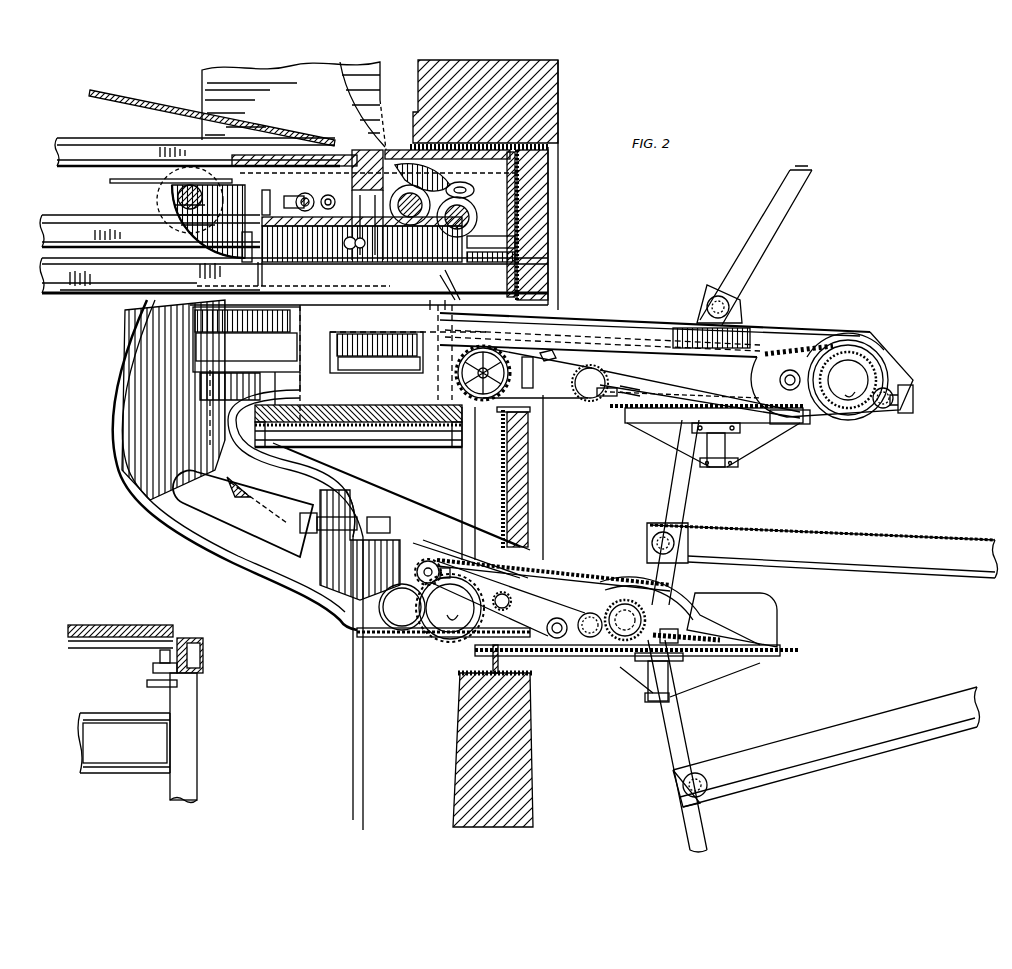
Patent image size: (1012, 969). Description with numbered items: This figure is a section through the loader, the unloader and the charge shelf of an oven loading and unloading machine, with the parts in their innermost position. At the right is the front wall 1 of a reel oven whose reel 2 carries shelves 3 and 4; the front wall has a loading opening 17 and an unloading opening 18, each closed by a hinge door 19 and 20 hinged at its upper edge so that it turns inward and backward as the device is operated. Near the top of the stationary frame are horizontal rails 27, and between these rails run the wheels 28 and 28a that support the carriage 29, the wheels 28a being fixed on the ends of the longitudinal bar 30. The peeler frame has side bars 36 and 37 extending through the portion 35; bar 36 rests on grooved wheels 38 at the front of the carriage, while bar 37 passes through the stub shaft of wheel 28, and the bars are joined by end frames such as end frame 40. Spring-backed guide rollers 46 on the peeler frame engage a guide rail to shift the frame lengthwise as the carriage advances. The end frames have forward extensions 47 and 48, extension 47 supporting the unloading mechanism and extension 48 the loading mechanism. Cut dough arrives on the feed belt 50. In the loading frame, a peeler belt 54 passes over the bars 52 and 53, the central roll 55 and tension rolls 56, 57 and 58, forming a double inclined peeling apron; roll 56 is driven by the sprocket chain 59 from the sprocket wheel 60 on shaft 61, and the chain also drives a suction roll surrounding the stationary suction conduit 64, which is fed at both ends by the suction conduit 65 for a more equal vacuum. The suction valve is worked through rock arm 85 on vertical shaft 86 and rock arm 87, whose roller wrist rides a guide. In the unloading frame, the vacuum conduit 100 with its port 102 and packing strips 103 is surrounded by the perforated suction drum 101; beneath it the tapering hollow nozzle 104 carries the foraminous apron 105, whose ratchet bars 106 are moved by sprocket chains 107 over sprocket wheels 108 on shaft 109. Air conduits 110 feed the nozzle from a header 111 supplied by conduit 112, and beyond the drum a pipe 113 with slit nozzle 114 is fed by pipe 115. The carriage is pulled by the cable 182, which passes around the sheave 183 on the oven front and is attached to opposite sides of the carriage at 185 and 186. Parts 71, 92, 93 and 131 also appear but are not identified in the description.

The front wall 1 is at (545, 100).
The reel 2 is at (757, 312).
The shelf 3 is at (733, 660).
The shelf 4 is at (663, 413).
The loading opening 17 is at (520, 567).
The unloading opening 18 is at (532, 407).
The hinge door 19 is at (548, 577).
The hinge door 20 is at (555, 312).
The horizontal rails 27 is at (90, 150).
The wheels 28 is at (176, 196).
The wheels 28a is at (420, 168).
The carriage 29 is at (307, 157).
The longitudinal bar 30 is at (480, 254).
The portion 35 is at (177, 237).
The side bar 36 is at (480, 224).
The side bar 37 is at (165, 205).
The grooved wheels 38 is at (440, 278).
The end frame 40 is at (272, 560).
The guide rollers 46 is at (313, 262).
The forward extension 47 is at (847, 333).
The forward extension 48 is at (615, 578).
The feed belt 50 is at (150, 627).
The bar 52 is at (490, 638).
The bar 53 is at (777, 648).
The peeler belt 54 is at (703, 623).
The central roll 55 is at (633, 613).
The tension roll 56 is at (588, 640).
The tension roll 57 is at (557, 638).
The tension roll 58 is at (610, 608).
The sprocket chain 59 is at (550, 607).
The sprocket wheel 60 is at (430, 565).
The shaft 61 is at (450, 574).
The suction conduit 64 is at (448, 615).
The suction conduit 65 is at (400, 617).
The plate 71 is at (213, 83).
The rock arm 85 is at (300, 200).
The vertical shaft 86 is at (242, 262).
The rock arm 87 is at (262, 262).
The roller 92 is at (458, 638).
The roller 93 is at (450, 608).
The vacuum conduit 100 is at (862, 377).
The suction drum 101 is at (875, 382).
The port 102 is at (848, 380).
The packing strips 103 is at (843, 410).
The tapering hollow nozzle 104 is at (807, 427).
The foraminous apron 105 is at (660, 377).
The ratchet bars 106 is at (547, 353).
The sprocket chains 107 is at (568, 398).
The sprocket wheels 108 is at (508, 378).
The shaft 109 is at (485, 380).
The air conduits 110 is at (627, 396).
The header 111 is at (593, 396).
The conduit 112 is at (553, 380).
The pipe 113 is at (915, 397).
The nozzle 114 is at (877, 407).
The pipe 115 is at (752, 358).
The platform 131 is at (393, 405).
The cable 182 is at (115, 93).
The sheave 183 is at (530, 166).
The connection point 185 is at (395, 148).
The connection point 186 is at (190, 185).